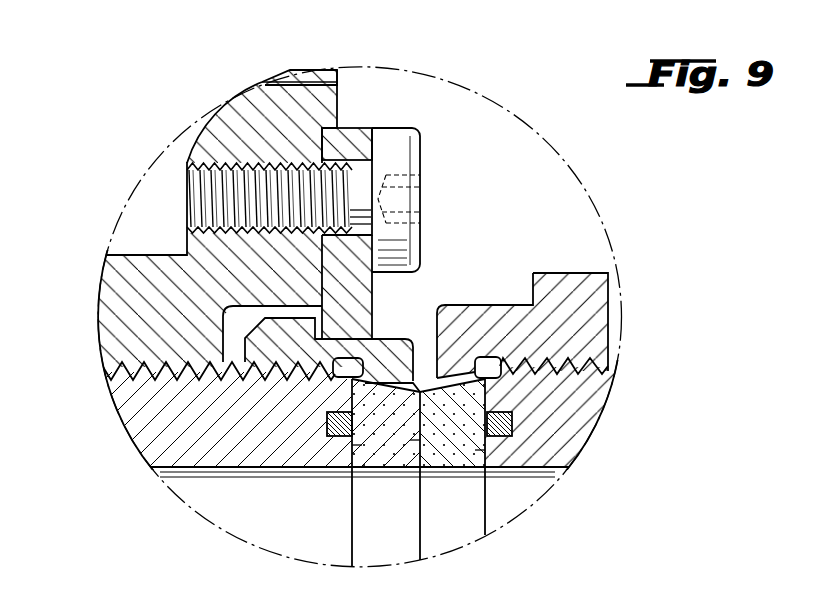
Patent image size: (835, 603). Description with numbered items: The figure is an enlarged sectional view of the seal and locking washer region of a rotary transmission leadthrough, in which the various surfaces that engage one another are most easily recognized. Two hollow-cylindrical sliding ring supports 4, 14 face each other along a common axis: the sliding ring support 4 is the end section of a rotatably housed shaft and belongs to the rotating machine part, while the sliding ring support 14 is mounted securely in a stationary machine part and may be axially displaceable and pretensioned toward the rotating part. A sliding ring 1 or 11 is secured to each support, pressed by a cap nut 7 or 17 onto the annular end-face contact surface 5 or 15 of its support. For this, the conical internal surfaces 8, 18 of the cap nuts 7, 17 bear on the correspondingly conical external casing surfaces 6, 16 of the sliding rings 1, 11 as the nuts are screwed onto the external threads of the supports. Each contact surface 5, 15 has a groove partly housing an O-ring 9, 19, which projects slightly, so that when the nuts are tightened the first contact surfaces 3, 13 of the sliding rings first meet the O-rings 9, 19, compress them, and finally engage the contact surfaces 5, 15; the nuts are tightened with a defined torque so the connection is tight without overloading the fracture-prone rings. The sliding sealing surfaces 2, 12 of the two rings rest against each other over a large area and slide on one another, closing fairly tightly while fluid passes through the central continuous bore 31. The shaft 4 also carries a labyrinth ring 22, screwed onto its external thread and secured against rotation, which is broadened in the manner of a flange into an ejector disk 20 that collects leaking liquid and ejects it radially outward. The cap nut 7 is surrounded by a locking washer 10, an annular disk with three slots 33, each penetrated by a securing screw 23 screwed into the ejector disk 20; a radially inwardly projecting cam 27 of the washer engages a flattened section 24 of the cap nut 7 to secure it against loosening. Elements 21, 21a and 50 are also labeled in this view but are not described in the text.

The sliding ring 1 is at (385, 400).
The sliding sealing surface 2 is at (422, 445).
The first contact surface 3 is at (346, 452).
The sliding ring support 4 is at (170, 446).
The contact surface 5 is at (362, 450).
The external casing surface 6 is at (392, 375).
The cap nut 7 is at (272, 350).
The conical internal surface 8 is at (423, 372).
The O-ring 9 is at (336, 430).
The locking washer 10 is at (352, 137).
The sliding ring 11 is at (458, 410).
The sliding sealing surface 12 is at (412, 443).
The first contact surface 13 is at (490, 448).
The sliding ring support 14 is at (592, 412).
The contact surface 15 is at (478, 452).
The external casing surface 16 is at (466, 368).
The cap nut 17 is at (567, 280).
The conical internal surface 18 is at (448, 378).
The O-ring 19 is at (515, 430).
The ejector disk 20 is at (235, 140).
The toothing 21 is at (230, 395).
The teeth 21a is at (165, 364).
The labyrinth ring 22 is at (150, 322).
The securing screw 23 is at (425, 152).
The flattened section 24 is at (405, 292).
The cam 27 is at (347, 332).
The central continuous bore 31 is at (255, 528).
The slot 33 is at (371, 195).
The cover plate 50 is at (318, 71).